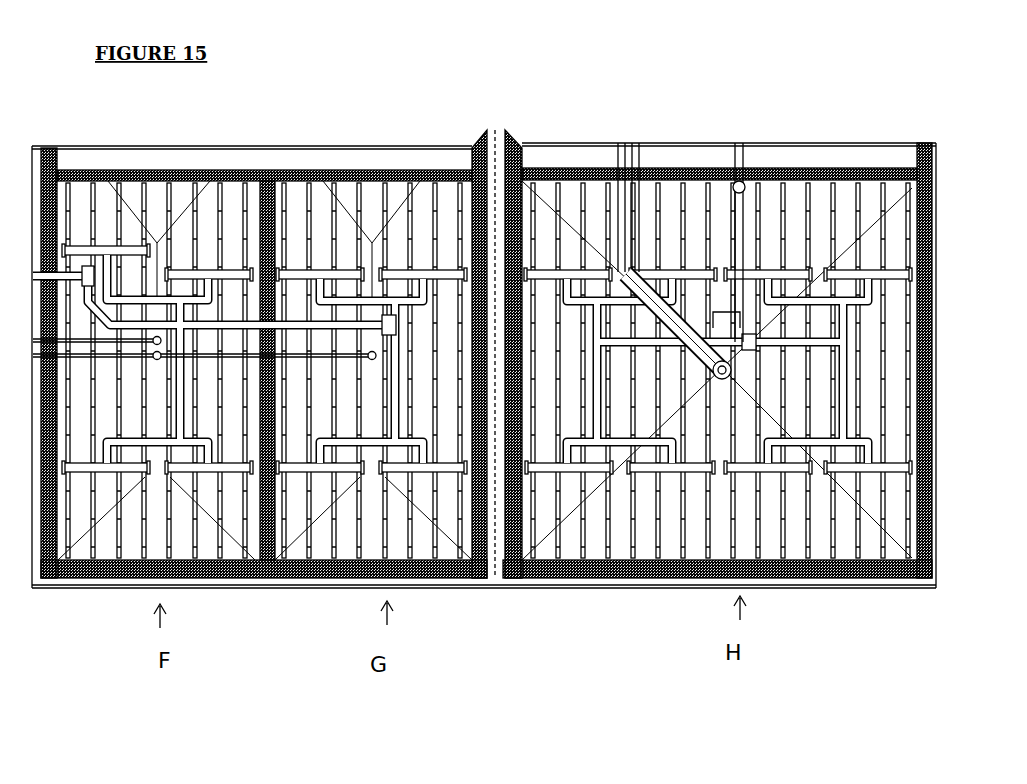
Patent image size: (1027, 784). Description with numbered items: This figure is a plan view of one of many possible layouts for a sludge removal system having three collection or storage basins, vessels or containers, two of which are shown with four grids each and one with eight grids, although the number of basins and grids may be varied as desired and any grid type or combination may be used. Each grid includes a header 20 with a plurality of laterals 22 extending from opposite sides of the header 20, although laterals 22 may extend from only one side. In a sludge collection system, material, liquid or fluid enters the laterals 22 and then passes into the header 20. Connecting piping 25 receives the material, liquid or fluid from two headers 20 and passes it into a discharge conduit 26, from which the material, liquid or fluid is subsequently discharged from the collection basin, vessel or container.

The header 20 is at (132, 296).
The laterals 22 is at (73, 212).
The connecting piping 25 is at (162, 298).
The discharge conduit 26 is at (428, 362).